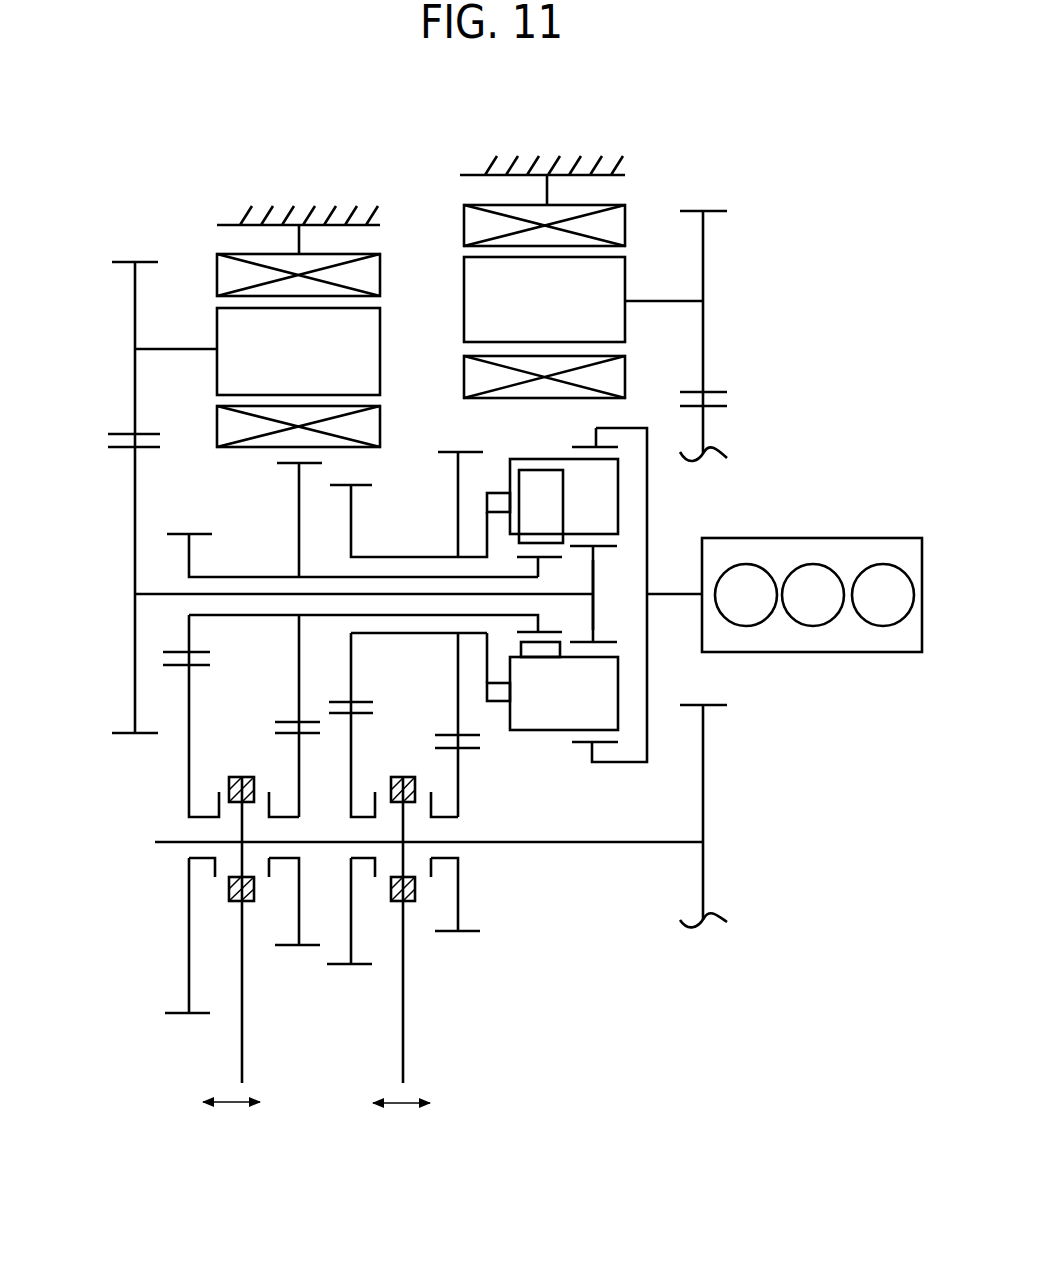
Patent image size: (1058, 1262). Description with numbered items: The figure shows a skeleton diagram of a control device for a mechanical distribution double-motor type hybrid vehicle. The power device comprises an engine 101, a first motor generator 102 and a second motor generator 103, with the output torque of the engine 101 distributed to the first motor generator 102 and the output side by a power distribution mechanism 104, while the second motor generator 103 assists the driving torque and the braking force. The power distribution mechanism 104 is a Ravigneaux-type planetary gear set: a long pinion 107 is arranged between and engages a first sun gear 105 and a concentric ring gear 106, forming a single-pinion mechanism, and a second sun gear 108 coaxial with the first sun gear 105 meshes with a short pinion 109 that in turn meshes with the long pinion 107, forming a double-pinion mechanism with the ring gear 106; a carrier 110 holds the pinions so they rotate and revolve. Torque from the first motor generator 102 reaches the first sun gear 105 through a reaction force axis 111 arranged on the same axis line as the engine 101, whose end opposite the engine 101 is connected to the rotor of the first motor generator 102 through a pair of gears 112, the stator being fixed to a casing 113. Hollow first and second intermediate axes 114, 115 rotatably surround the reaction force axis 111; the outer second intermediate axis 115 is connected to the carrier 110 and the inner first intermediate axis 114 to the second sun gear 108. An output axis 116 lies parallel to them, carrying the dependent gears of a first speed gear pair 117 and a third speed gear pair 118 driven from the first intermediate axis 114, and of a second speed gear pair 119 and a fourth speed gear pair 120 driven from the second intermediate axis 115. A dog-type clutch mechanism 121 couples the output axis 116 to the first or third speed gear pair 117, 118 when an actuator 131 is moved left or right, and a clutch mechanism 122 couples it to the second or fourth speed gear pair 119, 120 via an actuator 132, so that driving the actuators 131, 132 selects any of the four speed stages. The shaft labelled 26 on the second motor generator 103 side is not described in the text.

The engine 101 is at (844, 538).
The first motor generator 102 is at (207, 258).
The second motor generator 103 is at (432, 238).
The power distribution mechanism 104 is at (666, 506).
The first sun gear 105 is at (608, 578).
The ring gear 106 is at (585, 447).
The long pinion 107 is at (619, 535).
The second sun gear 108 is at (542, 557).
The short pinion 109 is at (530, 471).
The carrier 110 is at (488, 491).
The reaction force axis 111 is at (157, 592).
The pair of gears 112 is at (90, 444).
The casing 113 is at (368, 227).
The first intermediate axis 114 is at (250, 575).
The second intermediate axis 115 is at (397, 558).
The output axis 116 is at (607, 844).
The first speed gear pair 117 is at (204, 690).
The third speed gear pair 118 is at (282, 701).
The second speed gear pair 119 is at (367, 692).
The fourth speed gear pair 120 is at (472, 768).
The clutch mechanism 121 is at (165, 872).
The clutch mechanism 122 is at (485, 875).
The actuator 131 is at (242, 1030).
The actuator 132 is at (403, 1040).
The clutch shaft 26 is at (722, 376).